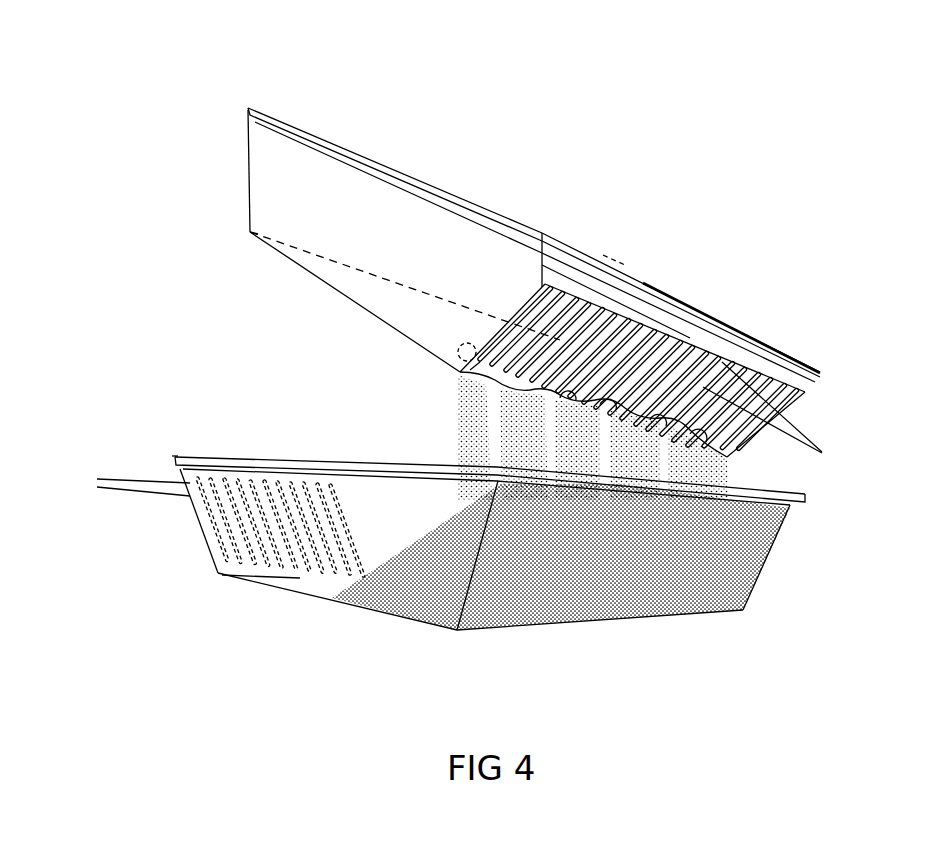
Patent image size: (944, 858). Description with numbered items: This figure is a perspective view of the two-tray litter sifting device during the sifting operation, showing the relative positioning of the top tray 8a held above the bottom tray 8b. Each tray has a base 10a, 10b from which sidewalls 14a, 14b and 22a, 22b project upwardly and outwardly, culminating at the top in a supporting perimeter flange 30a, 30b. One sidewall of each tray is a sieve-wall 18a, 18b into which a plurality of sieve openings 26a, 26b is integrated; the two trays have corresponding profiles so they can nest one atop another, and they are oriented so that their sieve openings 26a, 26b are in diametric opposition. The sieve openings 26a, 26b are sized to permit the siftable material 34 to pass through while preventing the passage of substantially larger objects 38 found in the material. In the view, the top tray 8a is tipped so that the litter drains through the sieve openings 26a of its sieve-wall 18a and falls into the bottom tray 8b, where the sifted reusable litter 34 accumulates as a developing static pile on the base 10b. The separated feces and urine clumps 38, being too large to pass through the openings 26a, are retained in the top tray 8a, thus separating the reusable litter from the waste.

The top tray 8a is at (563, 205).
The bottom tray 8b is at (672, 628).
The base 10a is at (345, 279).
The base 10b is at (298, 580).
The sidewall 14a is at (325, 208).
The sidewall 14b is at (278, 577).
The sieve-wall 18a is at (702, 385).
The sieve-wall 18b is at (330, 461).
The sidewall 22a is at (352, 147).
The sidewall 22b is at (757, 527).
The sieve openings 26a is at (770, 438).
The sieve openings 26b is at (182, 485).
The supporting perimeter flange 30a is at (470, 221).
The supporting perimeter flange 30b is at (287, 476).
The siftable material 34 is at (525, 628).
The larger objects 38 is at (460, 358).